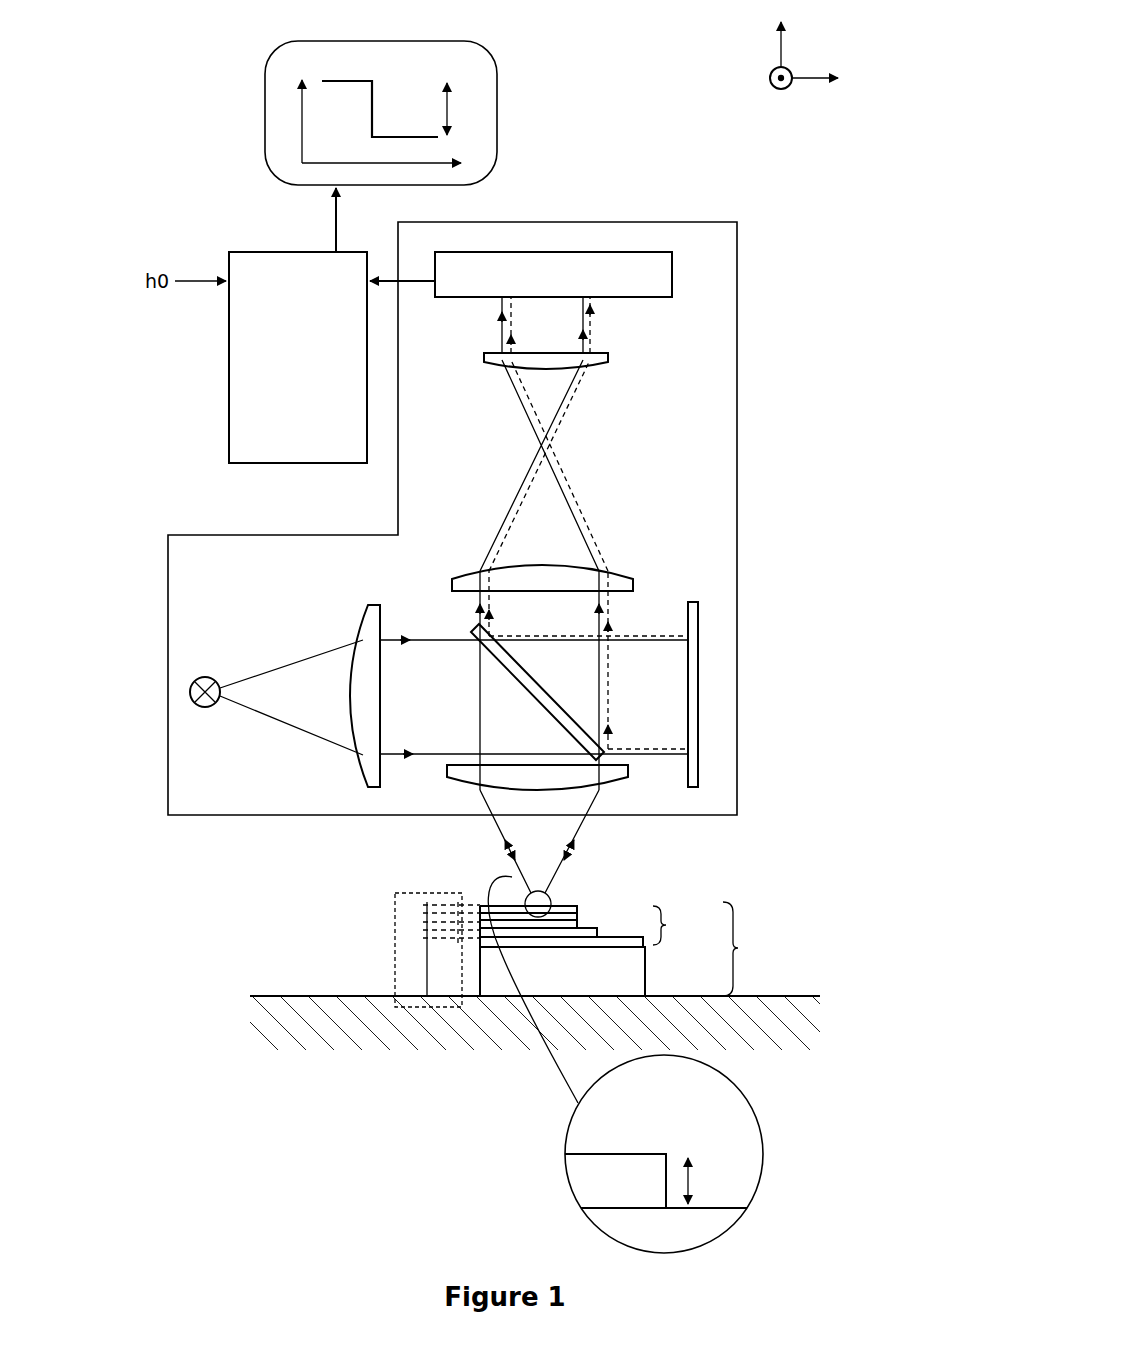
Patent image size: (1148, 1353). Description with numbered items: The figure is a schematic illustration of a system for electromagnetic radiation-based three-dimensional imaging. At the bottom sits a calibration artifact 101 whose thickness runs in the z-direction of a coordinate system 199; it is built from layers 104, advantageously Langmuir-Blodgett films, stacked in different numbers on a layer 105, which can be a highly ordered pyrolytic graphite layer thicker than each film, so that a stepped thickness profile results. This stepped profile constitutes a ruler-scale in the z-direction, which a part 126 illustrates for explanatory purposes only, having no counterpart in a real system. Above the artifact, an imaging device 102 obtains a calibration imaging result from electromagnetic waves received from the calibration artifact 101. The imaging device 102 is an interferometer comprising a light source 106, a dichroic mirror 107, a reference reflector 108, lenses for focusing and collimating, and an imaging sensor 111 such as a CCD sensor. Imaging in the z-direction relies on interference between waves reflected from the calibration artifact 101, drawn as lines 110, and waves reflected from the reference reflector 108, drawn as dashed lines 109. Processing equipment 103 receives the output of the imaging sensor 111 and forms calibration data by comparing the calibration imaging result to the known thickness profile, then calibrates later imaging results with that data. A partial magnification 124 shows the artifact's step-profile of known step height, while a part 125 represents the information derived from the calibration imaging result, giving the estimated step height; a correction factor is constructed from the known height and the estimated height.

The calibration artifact 101 is at (754, 949).
The imaging device 102 is at (737, 430).
The processing equipment 103 is at (298, 357).
The layers 104 is at (597, 926).
The layer 105 is at (562, 971).
The light source 106 is at (205, 708).
The dichroic mirror 107 is at (498, 660).
The reference reflector 108 is at (692, 602).
The dashed lines 109 is at (560, 428).
The lines 110 is at (517, 399).
The imaging sensor 111 is at (553, 274).
The partial magnification 124 is at (763, 1140).
The part representing information derived from the calibration imaging result 125 is at (263, 132).
The part illustrating the ruler-scale 126 is at (395, 965).
The coordinate system 199 is at (810, 54).